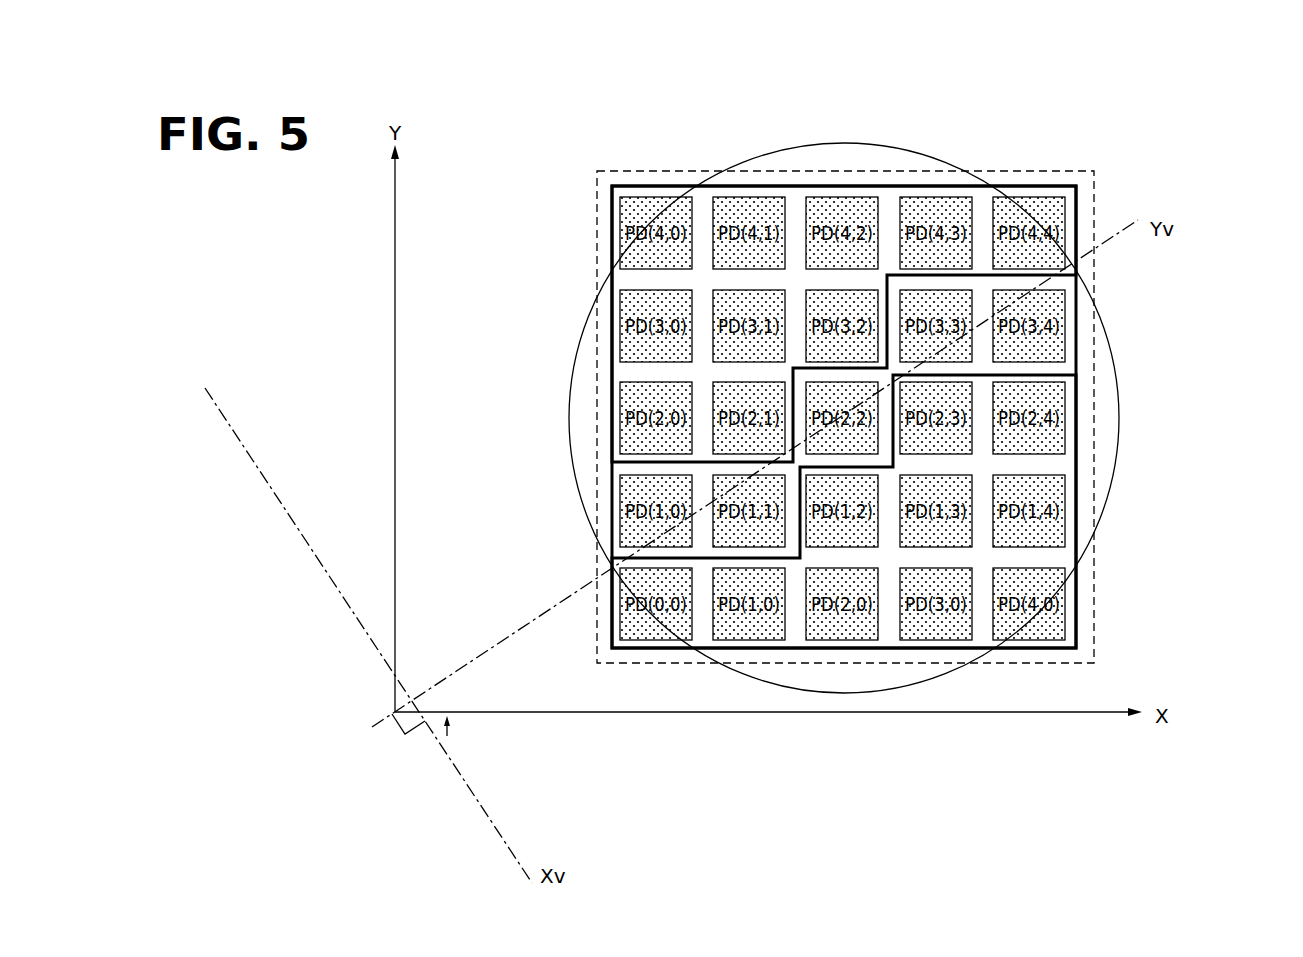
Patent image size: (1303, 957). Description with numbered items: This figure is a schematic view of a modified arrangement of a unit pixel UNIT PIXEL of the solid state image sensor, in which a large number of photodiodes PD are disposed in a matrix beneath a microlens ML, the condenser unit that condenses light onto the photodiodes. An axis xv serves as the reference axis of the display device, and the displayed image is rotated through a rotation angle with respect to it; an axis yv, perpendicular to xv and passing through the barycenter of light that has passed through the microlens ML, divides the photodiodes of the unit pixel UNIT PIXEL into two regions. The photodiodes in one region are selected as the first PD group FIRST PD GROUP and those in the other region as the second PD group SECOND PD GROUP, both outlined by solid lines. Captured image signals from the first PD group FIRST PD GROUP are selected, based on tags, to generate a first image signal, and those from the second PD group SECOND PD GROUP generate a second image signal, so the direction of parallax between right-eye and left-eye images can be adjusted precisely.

The microlens ML is at (1113, 363).
The unit pixel UNIT PIXEL is at (1113, 138).
The first PD group FIRST PD GROUP is at (612, 238).
The second PD group SECOND PD GROUP is at (1076, 593).